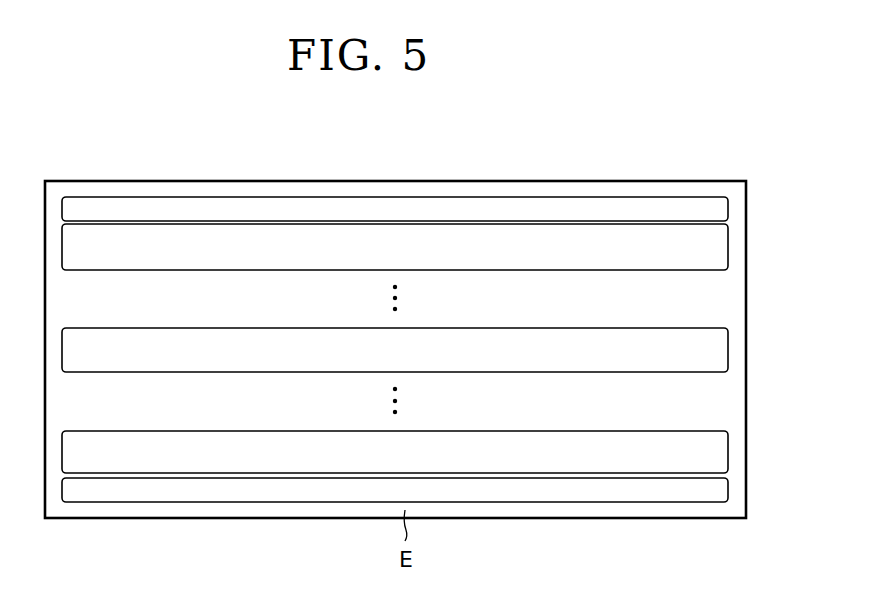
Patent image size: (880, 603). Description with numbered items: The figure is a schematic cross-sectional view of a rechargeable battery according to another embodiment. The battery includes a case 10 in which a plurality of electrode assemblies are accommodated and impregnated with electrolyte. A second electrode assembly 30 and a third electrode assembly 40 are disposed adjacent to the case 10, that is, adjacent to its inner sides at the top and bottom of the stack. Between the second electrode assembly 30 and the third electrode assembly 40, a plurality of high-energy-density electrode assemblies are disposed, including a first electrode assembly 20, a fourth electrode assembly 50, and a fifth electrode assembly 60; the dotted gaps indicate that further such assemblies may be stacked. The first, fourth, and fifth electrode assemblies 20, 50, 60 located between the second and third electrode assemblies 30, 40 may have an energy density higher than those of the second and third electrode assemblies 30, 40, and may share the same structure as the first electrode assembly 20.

The case 10 is at (404, 181).
The first electrode assembly 20 is at (722, 351).
The second electrode assembly 30 is at (722, 212).
The third electrode assembly 40 is at (722, 493).
The fourth electrode assembly 50 is at (722, 454).
The fifth electrode assembly 60 is at (722, 250).